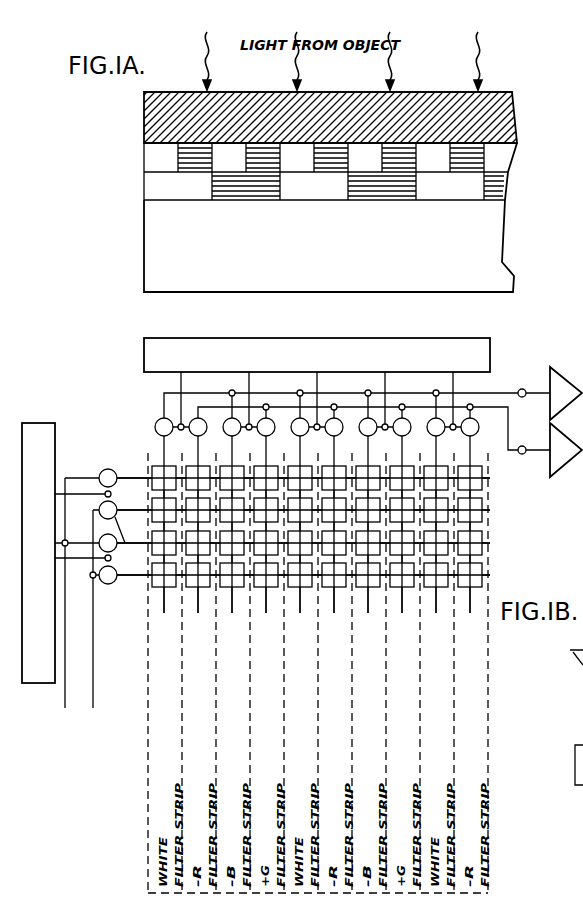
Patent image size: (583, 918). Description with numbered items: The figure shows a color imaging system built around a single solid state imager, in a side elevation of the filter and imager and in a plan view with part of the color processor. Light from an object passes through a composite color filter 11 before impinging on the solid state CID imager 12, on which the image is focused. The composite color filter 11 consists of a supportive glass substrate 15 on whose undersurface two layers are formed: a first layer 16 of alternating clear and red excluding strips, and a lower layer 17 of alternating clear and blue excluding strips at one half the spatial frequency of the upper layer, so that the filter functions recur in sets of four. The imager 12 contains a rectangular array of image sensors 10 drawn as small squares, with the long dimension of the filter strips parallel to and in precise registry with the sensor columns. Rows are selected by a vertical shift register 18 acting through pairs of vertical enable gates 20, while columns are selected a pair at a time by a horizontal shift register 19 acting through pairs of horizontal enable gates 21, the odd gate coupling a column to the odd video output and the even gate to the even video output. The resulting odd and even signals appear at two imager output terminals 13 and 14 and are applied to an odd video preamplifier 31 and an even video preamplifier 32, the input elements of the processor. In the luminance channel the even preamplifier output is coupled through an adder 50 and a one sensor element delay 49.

In FIG. 1B, the image sensors 10 is at (260, 472).
In FIG. 1A, the composite color filter 11 is at (524, 93).
In FIG. 1A, the solid state CID imager 12 is at (144, 252).
In FIG. 1B, the imager output terminal 13 is at (522, 389).
In FIG. 1B, the imager output terminal 14 is at (522, 456).
In FIG. 1A, the glass substrate 15 is at (144, 119).
In FIG. 1A, the first layer 16 is at (144, 157).
In FIG. 1A, the lower layer 17 is at (144, 187).
In FIG. 1B, the vertical shift register 18 is at (40, 423).
In FIG. 1B, the horizontal shift register 19 is at (144, 357).
In FIG. 1B, the vertical enable gates 20 is at (106, 471).
In FIG. 1B, the horizontal enable gates 21 is at (188, 420).
In FIG. 1B, the odd video preamplifier 31 is at (553, 367).
In FIG. 1B, the even video preamplifier 32 is at (553, 477).
In FIG. 1B, the one sensor element delay 49 is at (575, 770).
In FIG. 1B, the adder 50 is at (571, 676).